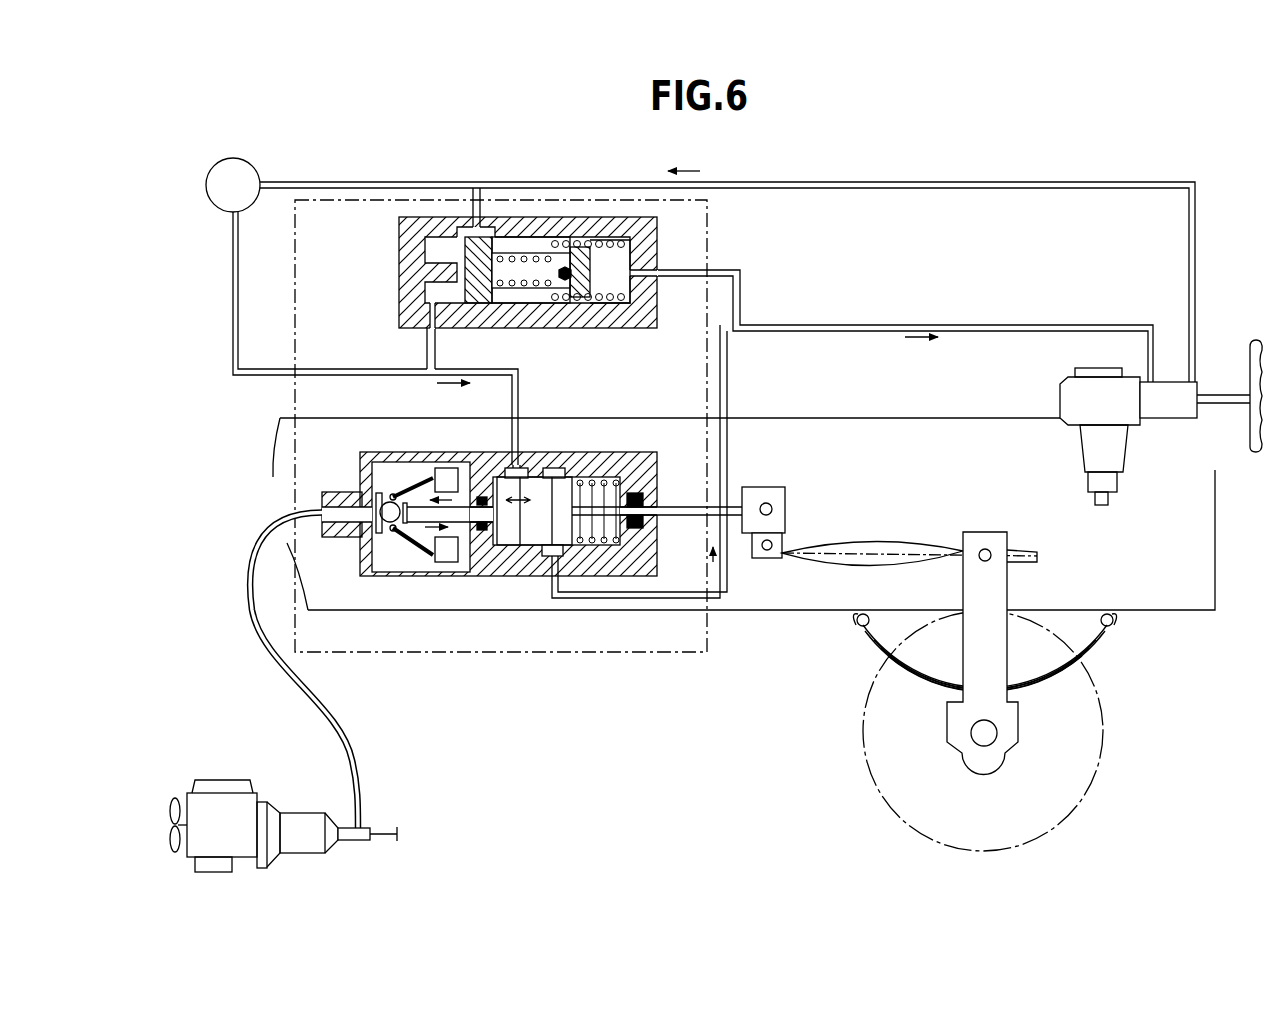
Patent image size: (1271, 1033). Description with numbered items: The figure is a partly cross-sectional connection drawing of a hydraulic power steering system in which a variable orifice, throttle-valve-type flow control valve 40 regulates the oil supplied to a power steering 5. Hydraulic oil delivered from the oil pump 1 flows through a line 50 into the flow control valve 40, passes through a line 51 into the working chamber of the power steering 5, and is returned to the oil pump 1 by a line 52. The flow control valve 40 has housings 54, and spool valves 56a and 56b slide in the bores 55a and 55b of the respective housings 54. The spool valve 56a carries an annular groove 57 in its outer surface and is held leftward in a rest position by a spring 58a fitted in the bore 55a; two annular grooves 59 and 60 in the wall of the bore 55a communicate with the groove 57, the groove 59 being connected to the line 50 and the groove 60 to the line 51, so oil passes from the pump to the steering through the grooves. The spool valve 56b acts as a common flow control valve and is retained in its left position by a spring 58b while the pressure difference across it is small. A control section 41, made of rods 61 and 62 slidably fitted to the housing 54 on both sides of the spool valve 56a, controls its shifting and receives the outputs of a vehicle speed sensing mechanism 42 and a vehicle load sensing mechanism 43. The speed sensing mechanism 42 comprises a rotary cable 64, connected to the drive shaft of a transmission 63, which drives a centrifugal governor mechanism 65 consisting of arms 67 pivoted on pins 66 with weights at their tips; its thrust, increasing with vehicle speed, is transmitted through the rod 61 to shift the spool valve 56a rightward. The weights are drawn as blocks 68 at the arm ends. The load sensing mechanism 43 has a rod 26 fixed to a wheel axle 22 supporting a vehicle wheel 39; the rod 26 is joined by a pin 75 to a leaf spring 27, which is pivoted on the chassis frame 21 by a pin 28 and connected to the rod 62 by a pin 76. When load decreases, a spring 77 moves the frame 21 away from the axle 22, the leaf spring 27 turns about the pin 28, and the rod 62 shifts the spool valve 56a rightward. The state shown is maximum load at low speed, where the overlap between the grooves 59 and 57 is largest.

The oil pump 1 is at (243, 163).
The power steering 5 is at (1167, 408).
The chassis frame 21 is at (1190, 612).
The wheel axle 22 is at (985, 735).
The rod 26 is at (963, 585).
The leaf spring 27 is at (877, 560).
The pin 28 is at (767, 551).
The vehicle wheel 39 is at (1103, 785).
The flow control valve 40 is at (548, 652).
The control section 41 is at (495, 530).
The vehicle speed sensing mechanism 42 is at (353, 708).
The vehicle load sensing mechanism 43 is at (836, 680).
The line 50 is at (350, 369).
The line 51 is at (728, 460).
The line 52 is at (800, 182).
The housing 54 is at (657, 245).
The bore 55a is at (610, 478).
The bore 55b is at (617, 265).
The spool valve 56a is at (520, 545).
The spool valve 56b is at (478, 237).
The annular groove 57 is at (553, 556).
The spring 58a is at (605, 545).
The spring 58b is at (615, 303).
The annular groove 59 is at (505, 470).
The annular groove 60 is at (555, 470).
The rod 61 is at (398, 560).
The rod 62 is at (680, 516).
The transmission 63 is at (308, 838).
The rotary cable 64 is at (313, 698).
The centrifugal governor mechanism 65 is at (366, 531).
The pin 66 is at (391, 495).
The arm 67 is at (415, 480).
The contact 68 is at (447, 470).
The pin 75 is at (985, 549).
The pin 76 is at (772, 509).
The spring 77 is at (1058, 690).